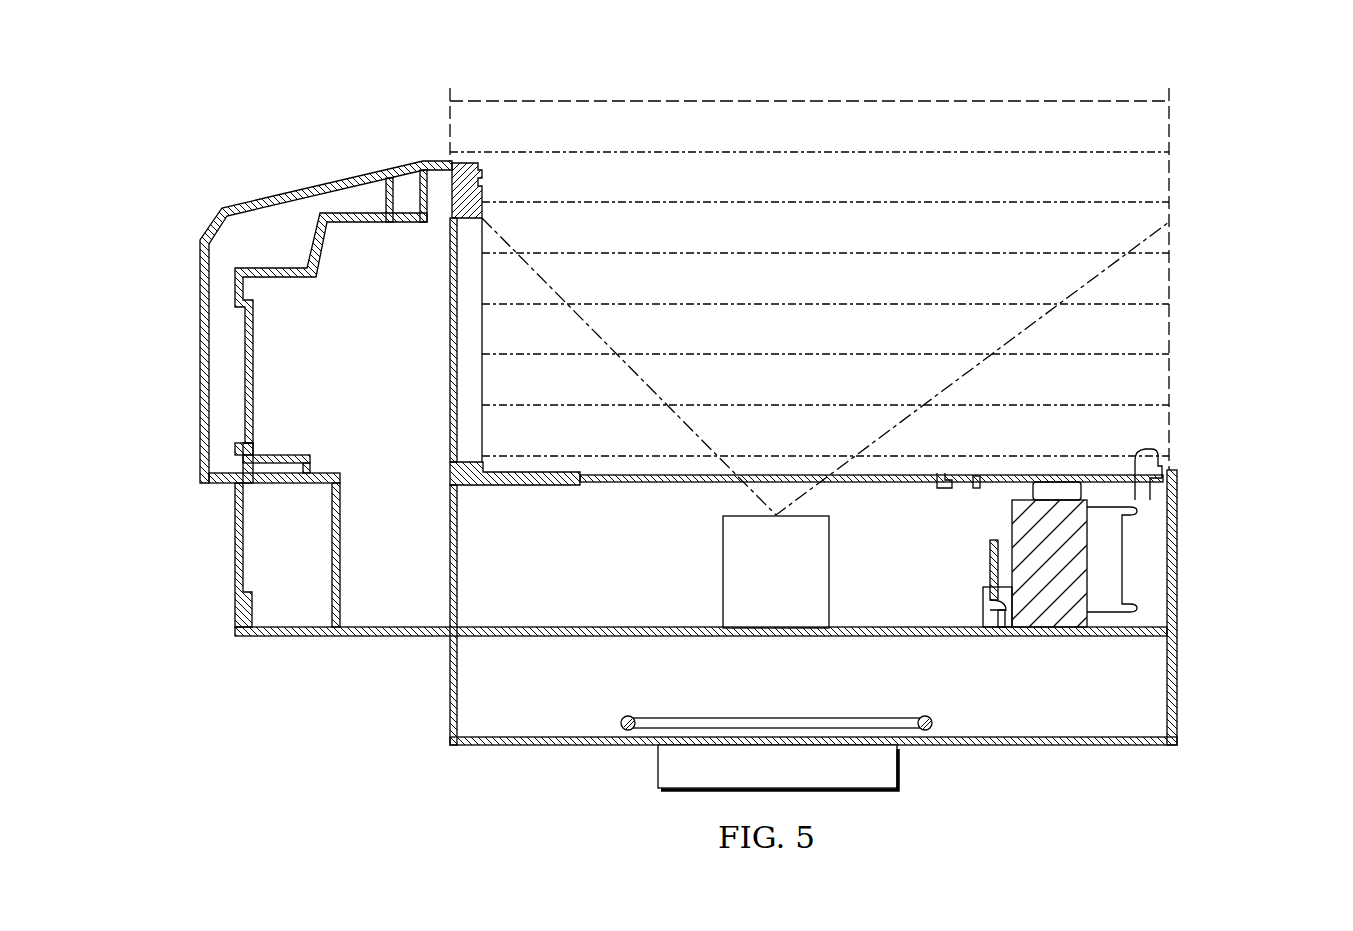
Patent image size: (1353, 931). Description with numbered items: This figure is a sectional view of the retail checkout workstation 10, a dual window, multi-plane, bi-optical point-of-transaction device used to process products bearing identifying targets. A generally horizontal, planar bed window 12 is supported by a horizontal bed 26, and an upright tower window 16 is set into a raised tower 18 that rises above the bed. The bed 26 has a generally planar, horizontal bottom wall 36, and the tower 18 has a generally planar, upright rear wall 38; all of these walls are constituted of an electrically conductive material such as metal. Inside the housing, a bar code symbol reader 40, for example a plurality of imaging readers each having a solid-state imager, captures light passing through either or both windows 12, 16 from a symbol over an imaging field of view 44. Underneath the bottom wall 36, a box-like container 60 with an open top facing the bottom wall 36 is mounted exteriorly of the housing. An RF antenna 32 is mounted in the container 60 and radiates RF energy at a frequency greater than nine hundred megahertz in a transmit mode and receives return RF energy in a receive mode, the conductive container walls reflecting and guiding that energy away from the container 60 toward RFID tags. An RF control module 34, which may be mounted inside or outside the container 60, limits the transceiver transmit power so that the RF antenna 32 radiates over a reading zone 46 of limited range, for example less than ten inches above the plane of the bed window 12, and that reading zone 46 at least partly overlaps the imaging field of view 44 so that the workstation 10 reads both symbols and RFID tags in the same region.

The workstation 10 is at (201, 128).
The bed window 12 is at (588, 475).
The tower window 16 is at (452, 342).
The tower 18 is at (201, 370).
The bed 26 is at (535, 472).
The RF antenna 32 is at (925, 716).
The RF control module 34 is at (658, 775).
The bottom wall 36 is at (662, 637).
The rear wall 38 is at (253, 375).
The bar code symbol reader 40 is at (775, 620).
The imaging field of view 44 is at (1153, 233).
The reading zone 46 is at (811, 113).
The container 60 is at (1162, 746).